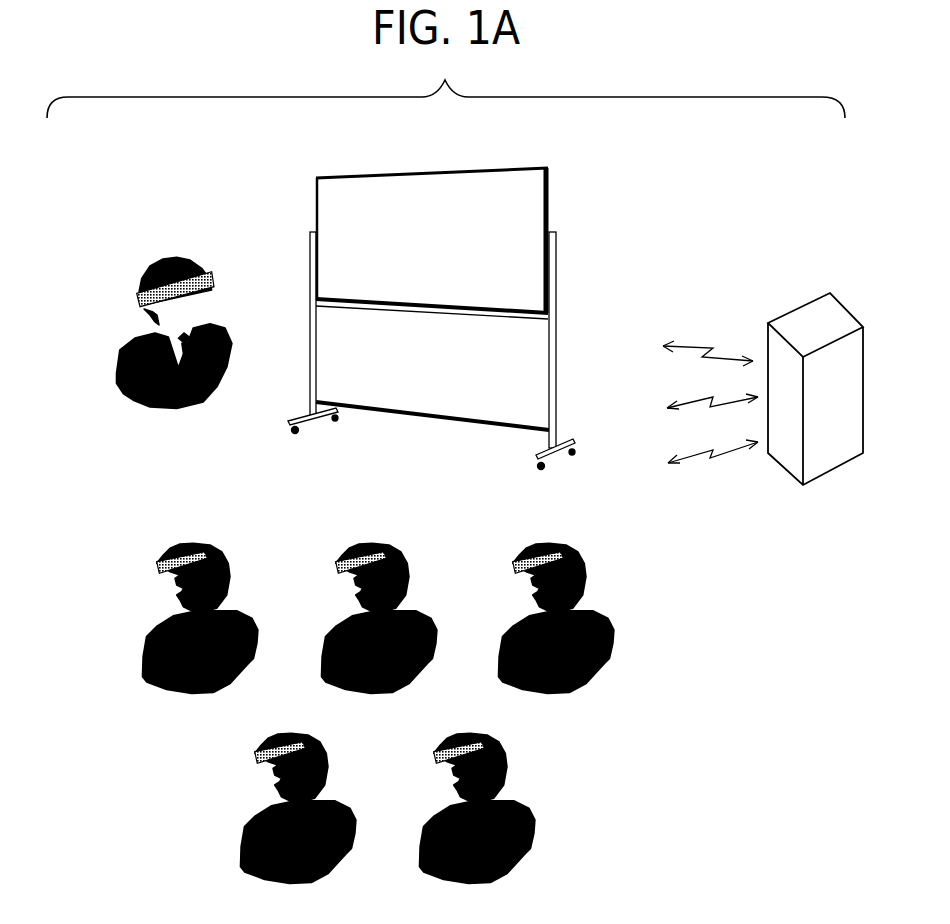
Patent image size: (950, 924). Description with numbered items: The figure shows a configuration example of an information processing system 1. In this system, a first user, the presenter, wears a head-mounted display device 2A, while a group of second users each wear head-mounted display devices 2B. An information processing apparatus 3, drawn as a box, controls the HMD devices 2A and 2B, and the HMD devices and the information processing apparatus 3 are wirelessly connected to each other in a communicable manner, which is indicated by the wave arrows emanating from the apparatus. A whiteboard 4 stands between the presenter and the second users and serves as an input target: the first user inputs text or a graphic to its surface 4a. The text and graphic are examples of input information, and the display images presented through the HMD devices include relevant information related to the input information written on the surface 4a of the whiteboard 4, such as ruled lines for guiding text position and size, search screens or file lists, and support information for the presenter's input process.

The information processing system 1 is at (613, 177).
The head-mounted display device 2A is at (137, 293).
The head-mounted display devices 2B is at (436, 757).
The information processing apparatus 3 is at (818, 297).
The whiteboard 4 is at (362, 173).
The surface 4a is at (330, 215).